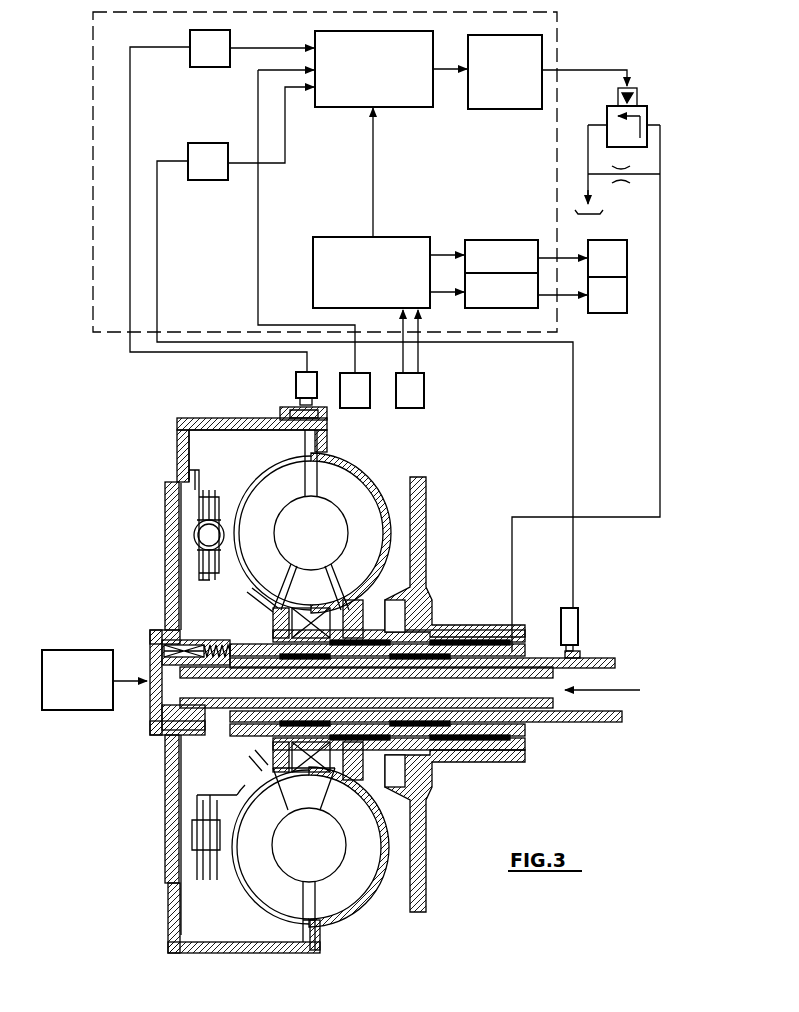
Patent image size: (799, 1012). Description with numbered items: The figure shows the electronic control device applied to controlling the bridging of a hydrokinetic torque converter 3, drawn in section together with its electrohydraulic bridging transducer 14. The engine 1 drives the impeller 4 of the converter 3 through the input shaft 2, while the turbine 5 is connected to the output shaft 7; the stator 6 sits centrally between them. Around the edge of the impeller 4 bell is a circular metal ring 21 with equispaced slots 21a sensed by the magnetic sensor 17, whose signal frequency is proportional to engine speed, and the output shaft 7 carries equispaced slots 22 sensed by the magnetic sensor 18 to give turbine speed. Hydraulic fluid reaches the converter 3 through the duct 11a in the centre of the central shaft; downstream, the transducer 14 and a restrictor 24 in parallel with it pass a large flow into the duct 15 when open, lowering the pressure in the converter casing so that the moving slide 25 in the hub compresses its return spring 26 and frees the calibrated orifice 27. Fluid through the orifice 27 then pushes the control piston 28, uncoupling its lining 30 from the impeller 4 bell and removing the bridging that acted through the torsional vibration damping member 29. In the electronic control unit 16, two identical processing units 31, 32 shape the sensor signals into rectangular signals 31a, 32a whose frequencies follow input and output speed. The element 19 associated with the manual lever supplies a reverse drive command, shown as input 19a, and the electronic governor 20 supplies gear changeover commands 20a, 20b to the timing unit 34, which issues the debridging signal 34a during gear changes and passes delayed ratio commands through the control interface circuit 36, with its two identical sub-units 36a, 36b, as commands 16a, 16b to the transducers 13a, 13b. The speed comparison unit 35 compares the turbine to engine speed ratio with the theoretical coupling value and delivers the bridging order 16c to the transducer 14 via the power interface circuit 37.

The internal combustion engine 1 is at (83, 662).
The input shaft 2 is at (128, 683).
The hydrokinetic torque converter 3 is at (379, 476).
The impeller 4 is at (356, 500).
The turbine 5 is at (270, 498).
The stator 6 is at (304, 582).
The output shaft 7 is at (615, 658).
The duct 11a is at (624, 692).
The electrohydraulic transducer 13a is at (613, 302).
The electrohydraulic transducer 13b is at (618, 238).
The bridging electrohydraulic transducer 14 is at (644, 108).
The duct 15 is at (660, 442).
The electronic control unit 16 is at (93, 235).
The electrical control command 16a is at (563, 296).
The electrical control command 16b is at (562, 258).
The bridging control command 16c is at (585, 70).
The magnetic sensor 17 is at (296, 384).
The magnetic sensor 18 is at (578, 622).
The reverse drive control element 19 is at (356, 395).
The signal line 19a is at (281, 325).
The electronic governor device 20 is at (406, 395).
The electric gear changeover command 20a is at (418, 364).
The electric gear changeover command 20b is at (403, 364).
The circular metal ring 21 is at (280, 413).
The slots 21a is at (296, 403).
The slots 22 is at (580, 656).
The restrictor 24 is at (617, 173).
The moving slide 25 is at (164, 652).
The return spring 26 is at (228, 642).
The calibrated orifice 27 is at (176, 640).
The control piston 28 is at (176, 564).
The torsional vibration damping member 29 is at (203, 536).
The lining 30 is at (189, 458).
The processing unit 31 is at (208, 52).
The signal 31a is at (272, 48).
The processing unit 32 is at (206, 154).
The signal 32a is at (285, 144).
The timing unit 34 is at (403, 250).
The debridging signal 34a is at (373, 180).
The speed comparison unit 35 is at (407, 94).
The control interface circuit 36 is at (496, 238).
The sub-unit 36a is at (510, 296).
The sub-unit 36b is at (511, 250).
The power interface circuit 37 is at (501, 92).